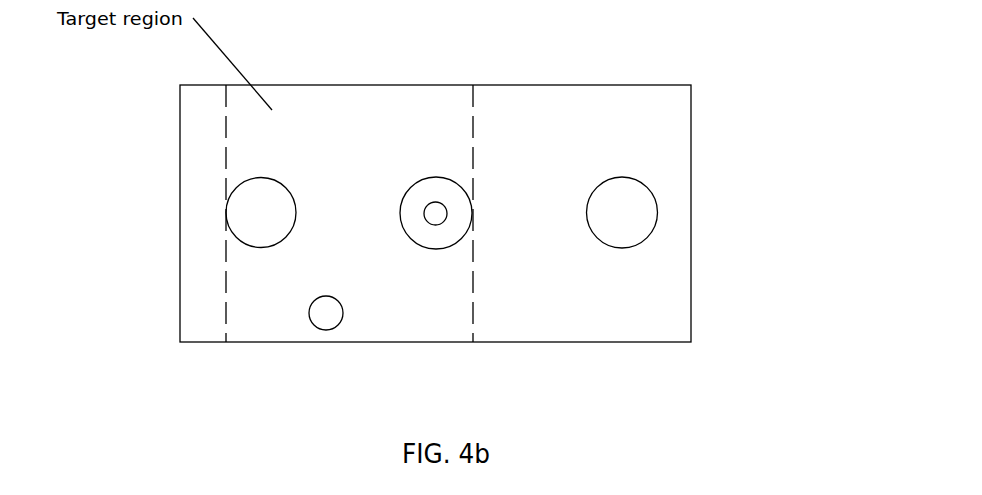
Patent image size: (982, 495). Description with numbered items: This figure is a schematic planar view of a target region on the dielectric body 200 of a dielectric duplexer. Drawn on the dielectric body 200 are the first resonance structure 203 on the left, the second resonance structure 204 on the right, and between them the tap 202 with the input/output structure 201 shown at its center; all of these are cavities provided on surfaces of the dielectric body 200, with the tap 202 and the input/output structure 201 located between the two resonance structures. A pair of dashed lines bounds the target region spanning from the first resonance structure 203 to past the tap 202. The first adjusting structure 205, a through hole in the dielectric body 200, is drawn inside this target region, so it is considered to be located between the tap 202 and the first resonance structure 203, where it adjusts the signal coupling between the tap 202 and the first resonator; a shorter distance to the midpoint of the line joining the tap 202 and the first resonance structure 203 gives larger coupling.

The dielectric body 200 is at (663, 108).
The input/output structure 201 is at (437, 207).
The tap 202 is at (442, 240).
The first resonance structure 203 is at (265, 224).
The second resonance structure 204 is at (642, 227).
The first adjusting structure 205 is at (328, 318).